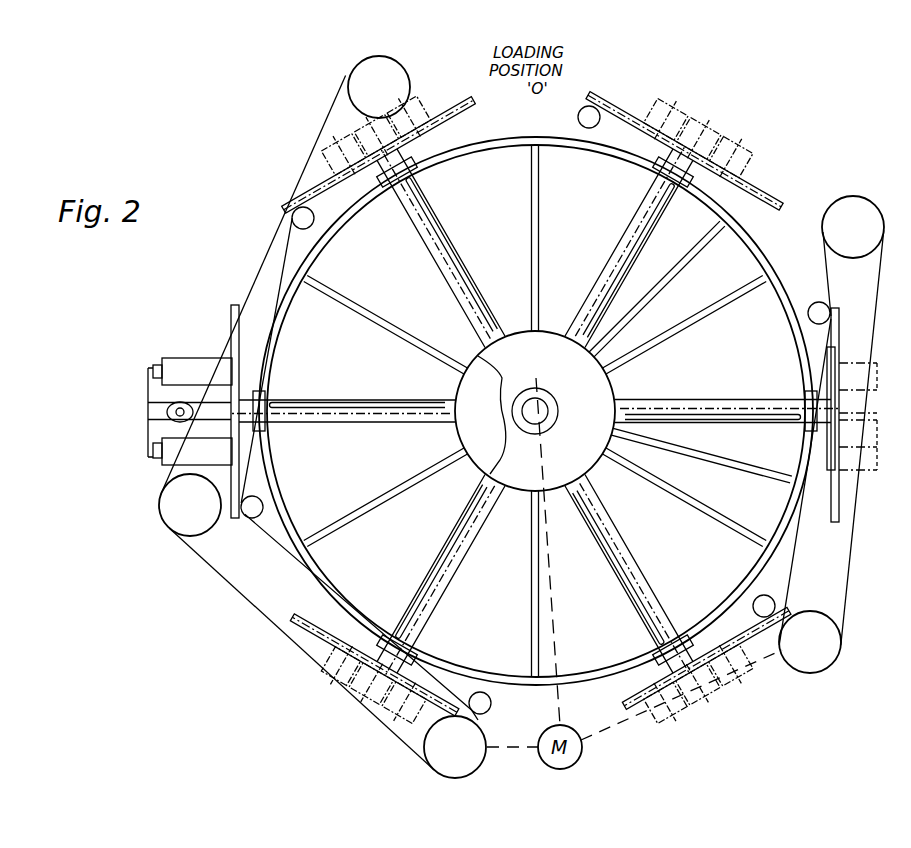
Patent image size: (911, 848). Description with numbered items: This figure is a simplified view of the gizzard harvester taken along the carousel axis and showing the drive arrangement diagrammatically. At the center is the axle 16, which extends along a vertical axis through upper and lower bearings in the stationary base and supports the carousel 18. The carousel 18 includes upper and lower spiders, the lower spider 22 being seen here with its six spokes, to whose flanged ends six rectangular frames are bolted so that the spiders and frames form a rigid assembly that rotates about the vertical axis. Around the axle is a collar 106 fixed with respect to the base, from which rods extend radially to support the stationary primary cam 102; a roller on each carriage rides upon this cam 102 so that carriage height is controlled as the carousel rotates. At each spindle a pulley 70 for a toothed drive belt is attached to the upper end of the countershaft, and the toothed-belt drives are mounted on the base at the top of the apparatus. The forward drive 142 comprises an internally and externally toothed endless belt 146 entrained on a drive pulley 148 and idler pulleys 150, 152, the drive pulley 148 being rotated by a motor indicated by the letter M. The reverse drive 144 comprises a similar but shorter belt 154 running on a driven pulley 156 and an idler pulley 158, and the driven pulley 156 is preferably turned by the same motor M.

The axle 16 is at (502, 373).
The carousel 18 is at (523, 128).
The lower spider 22 is at (303, 428).
The pulley 70 is at (314, 226).
The primary cam 102 is at (592, 150).
The collar 106 is at (553, 414).
The forward drive 142 is at (206, 279).
The reverse drive 144 is at (820, 178).
The endless belt 146 is at (221, 577).
The drive pulley 148 is at (470, 732).
The idler pulley 150 is at (206, 489).
The idler pulley 152 is at (401, 100).
The belt 154 is at (848, 521).
The driven pulley 156 is at (826, 627).
The idler pulley 158 is at (871, 238).